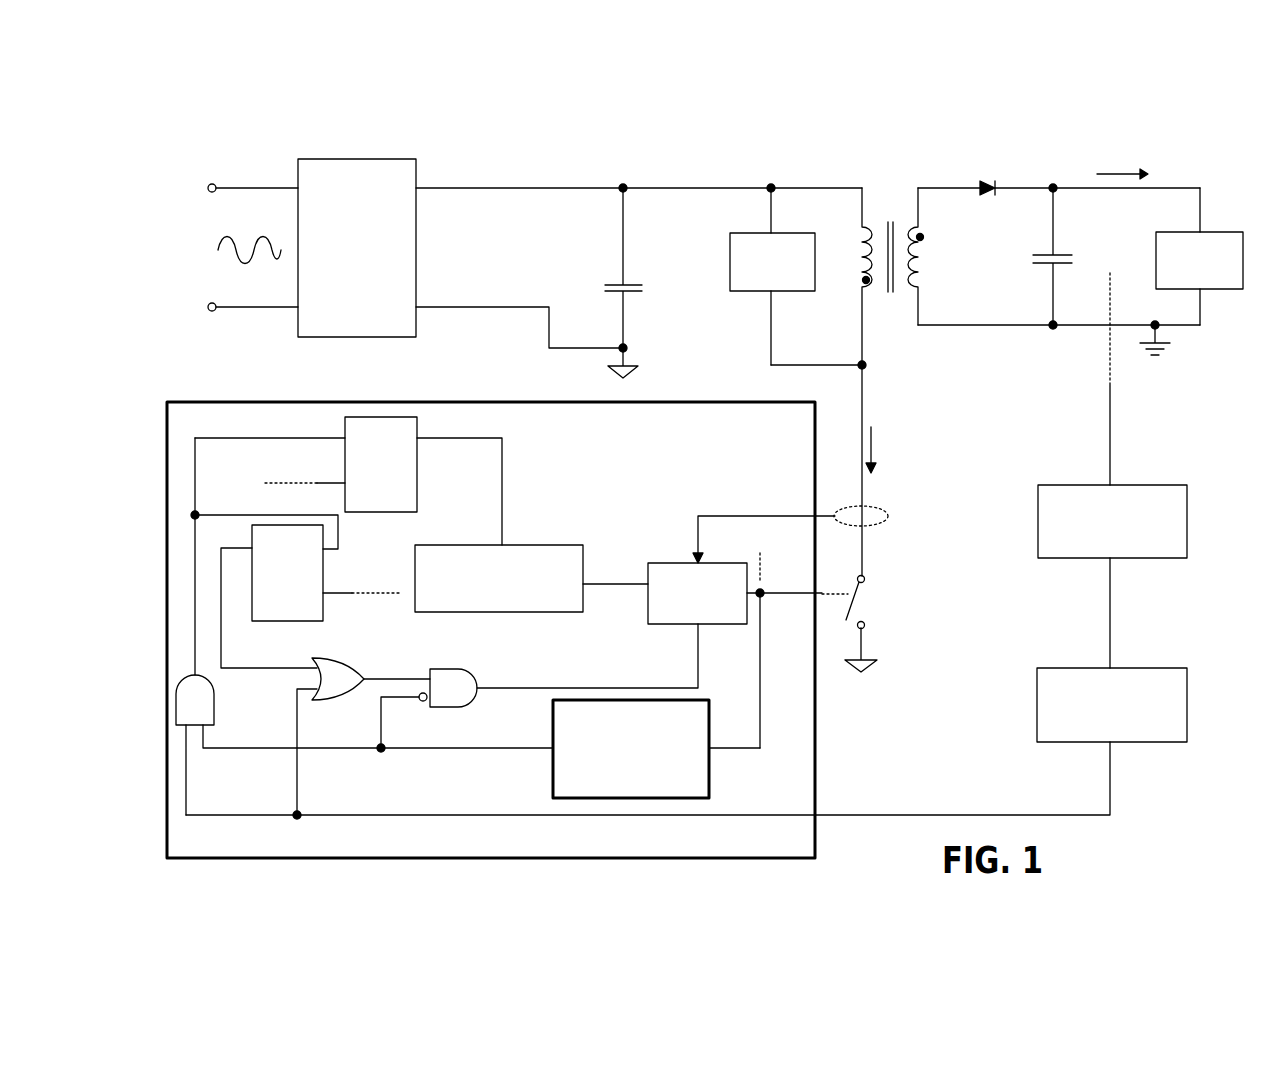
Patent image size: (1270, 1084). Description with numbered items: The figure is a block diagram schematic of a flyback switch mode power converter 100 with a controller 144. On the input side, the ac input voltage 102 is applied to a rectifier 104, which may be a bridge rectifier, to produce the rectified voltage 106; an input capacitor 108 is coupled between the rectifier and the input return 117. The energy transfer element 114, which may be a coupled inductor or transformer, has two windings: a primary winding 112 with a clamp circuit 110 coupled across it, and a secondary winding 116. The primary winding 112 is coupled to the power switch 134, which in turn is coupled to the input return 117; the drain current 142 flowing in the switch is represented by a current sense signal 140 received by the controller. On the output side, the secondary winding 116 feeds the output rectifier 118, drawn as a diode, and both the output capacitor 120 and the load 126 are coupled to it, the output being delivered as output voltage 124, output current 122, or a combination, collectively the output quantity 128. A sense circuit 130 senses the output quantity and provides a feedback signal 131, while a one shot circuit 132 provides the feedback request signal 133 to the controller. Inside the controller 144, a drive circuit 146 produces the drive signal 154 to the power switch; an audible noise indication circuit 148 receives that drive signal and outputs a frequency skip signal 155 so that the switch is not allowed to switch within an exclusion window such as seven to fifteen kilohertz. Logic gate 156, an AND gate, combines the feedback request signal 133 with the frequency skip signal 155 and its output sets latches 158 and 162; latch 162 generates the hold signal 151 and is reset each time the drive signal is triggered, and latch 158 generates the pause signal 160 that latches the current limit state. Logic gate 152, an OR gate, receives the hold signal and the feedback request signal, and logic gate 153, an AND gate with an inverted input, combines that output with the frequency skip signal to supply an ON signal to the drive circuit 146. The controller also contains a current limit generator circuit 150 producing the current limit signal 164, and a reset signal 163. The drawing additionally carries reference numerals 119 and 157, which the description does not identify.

The power converter 100 is at (817, 110).
The ac input voltage 102 is at (190, 227).
The rectifier 104 is at (340, 152).
The rectified voltage 106 is at (483, 252).
The input capacitor 108 is at (668, 278).
The clamp circuit 110 is at (786, 298).
The primary winding 112 is at (868, 256).
The energy transfer element 114 is at (895, 279).
The secondary winding 116 is at (916, 262).
The input return 117 is at (636, 362).
The rectifier D1 118 is at (982, 168).
The output return / ground 119 is at (1157, 360).
The output capacitor 120 is at (1026, 272).
The output current 122 is at (1119, 143).
The output voltage 124 is at (1100, 244).
The load 126 is at (1217, 226).
The output quantity 128 is at (1065, 389).
The sense circuit 130 is at (1190, 517).
The feedback signal 131 is at (1166, 620).
The one shot circuit 132 is at (1190, 680).
The feedback request signal 133 is at (1170, 778).
The power switch 134 is at (887, 591).
The current sense signal 140 is at (745, 465).
The drain current 142 is at (887, 426).
The controller 144 is at (254, 401).
The drive circuit 146 is at (663, 562).
The audible noise indication circuit 148 is at (550, 779).
The current limit generator circuit 150 is at (525, 613).
The hold signal 151 is at (262, 656).
The logic gate 152 is at (343, 699).
The logic gate 153 is at (456, 668).
The drive signal 154 is at (384, 575).
The frequency skip signal 155 is at (516, 735).
The logic gate 156 is at (220, 699).
The drive signal node 157 is at (764, 597).
The latch 158 is at (417, 485).
The pause signal 160 is at (543, 488).
The latch 162 is at (323, 603).
The reset signal 163 is at (268, 464).
The current limit signal 164 is at (604, 617).